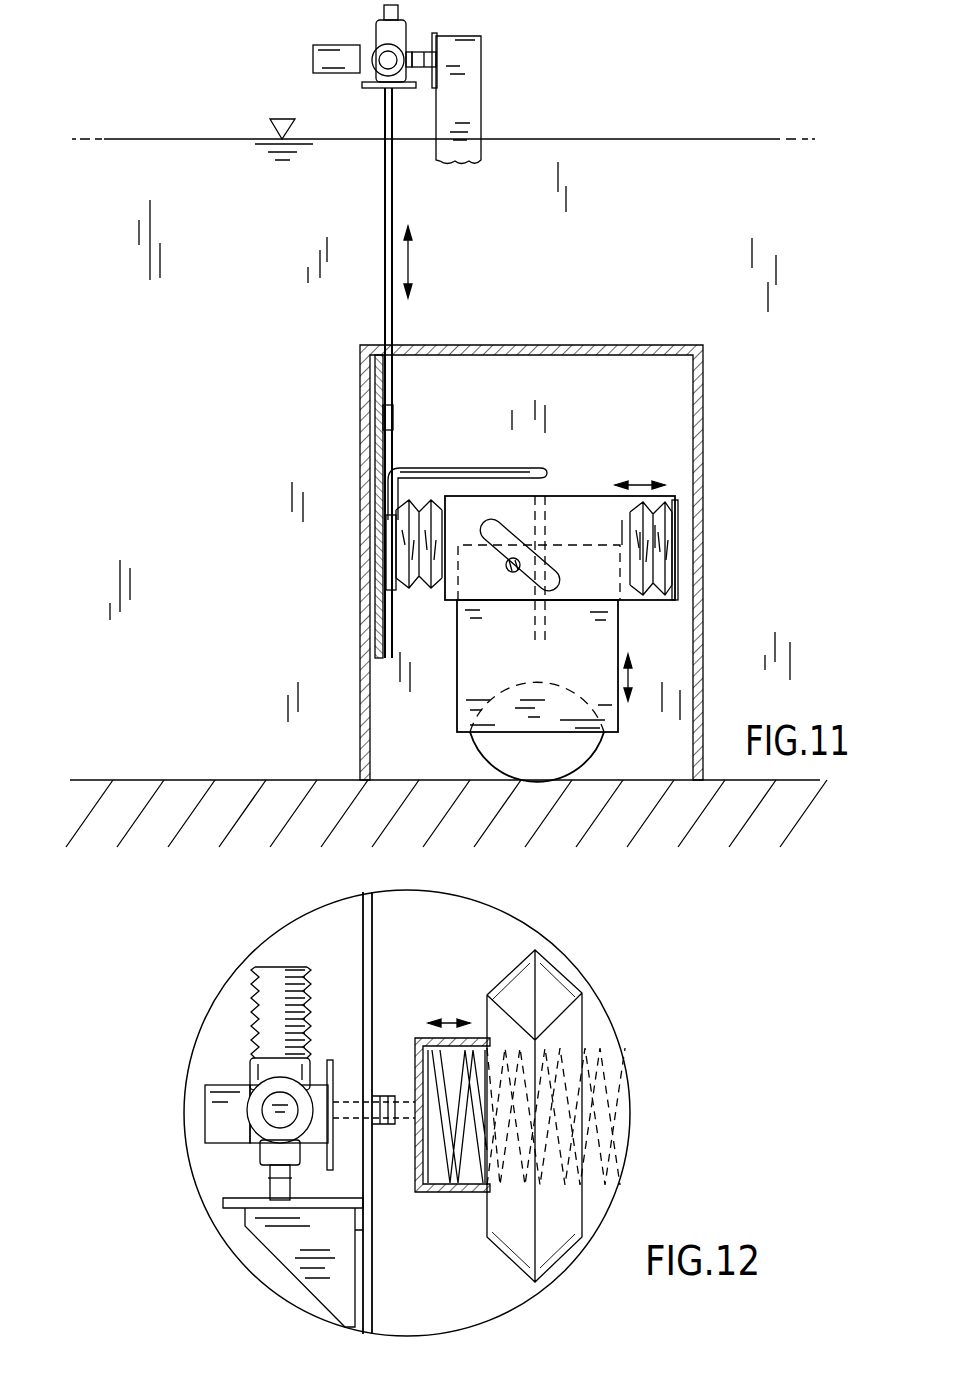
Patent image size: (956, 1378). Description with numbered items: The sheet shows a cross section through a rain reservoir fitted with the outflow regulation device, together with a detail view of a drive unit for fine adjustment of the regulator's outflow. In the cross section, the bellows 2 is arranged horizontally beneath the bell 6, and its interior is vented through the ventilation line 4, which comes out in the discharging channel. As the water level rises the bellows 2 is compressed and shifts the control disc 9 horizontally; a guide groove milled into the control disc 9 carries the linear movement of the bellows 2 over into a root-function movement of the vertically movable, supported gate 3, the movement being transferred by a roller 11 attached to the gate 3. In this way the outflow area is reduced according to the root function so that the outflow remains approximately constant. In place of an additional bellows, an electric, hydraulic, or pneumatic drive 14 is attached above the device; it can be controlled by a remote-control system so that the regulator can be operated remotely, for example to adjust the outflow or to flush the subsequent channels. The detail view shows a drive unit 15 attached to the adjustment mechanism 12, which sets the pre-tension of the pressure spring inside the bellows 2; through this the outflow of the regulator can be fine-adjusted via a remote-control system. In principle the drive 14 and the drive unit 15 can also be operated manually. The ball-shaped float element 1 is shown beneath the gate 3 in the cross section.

In FIG. 11, the float ball 1 is at (578, 753).
In FIG. 11, the bellows 2 is at (665, 518).
In FIG. 11, the gate 3 is at (608, 626).
In FIG. 11, the ventilation line 4 is at (471, 468).
In FIG. 11, the bell 6 is at (700, 604).
In FIG. 11, the control disc 9 is at (570, 503).
In FIG. 11, the roller 11 is at (500, 567).
In FIG. 12, the adjustment mechanism 12 is at (394, 1075).
In FIG. 11, the drive 14 is at (430, 22).
In FIG. 12, the drive unit 15 is at (228, 1165).